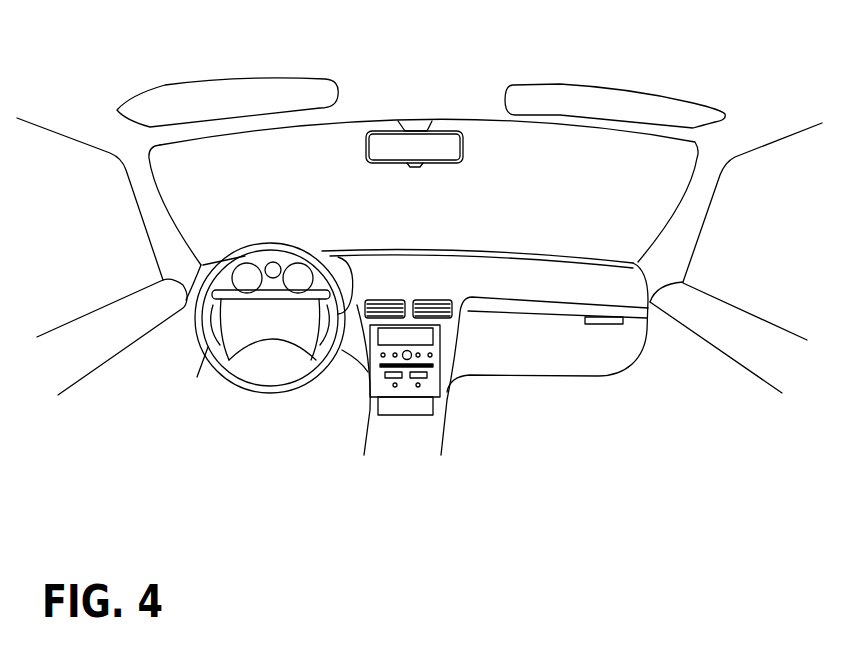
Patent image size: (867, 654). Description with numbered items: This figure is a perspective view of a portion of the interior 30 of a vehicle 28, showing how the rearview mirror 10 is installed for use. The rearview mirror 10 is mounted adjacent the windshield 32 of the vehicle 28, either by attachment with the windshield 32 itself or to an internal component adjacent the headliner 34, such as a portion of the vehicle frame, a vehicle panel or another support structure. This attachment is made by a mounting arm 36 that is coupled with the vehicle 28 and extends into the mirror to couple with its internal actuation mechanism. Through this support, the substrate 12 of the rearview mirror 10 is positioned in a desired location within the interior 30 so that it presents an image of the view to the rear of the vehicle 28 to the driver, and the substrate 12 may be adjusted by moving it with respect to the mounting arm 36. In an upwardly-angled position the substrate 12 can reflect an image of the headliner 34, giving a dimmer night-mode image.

The rearview mirror 10 is at (451, 128).
The substrate 12 is at (442, 150).
The vehicle 28 is at (731, 82).
The interior 30 is at (145, 73).
The windshield 32 is at (603, 197).
The headliner 34 is at (326, 52).
The mounting arm 36 is at (417, 128).